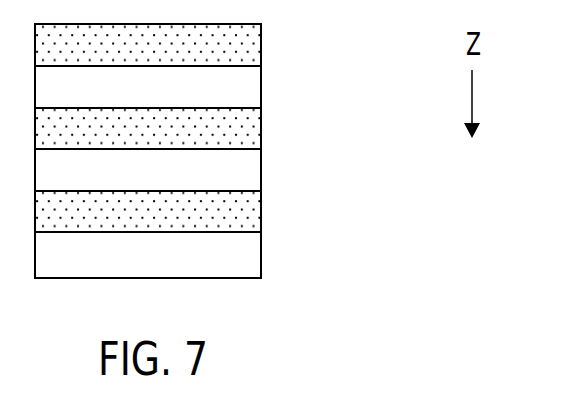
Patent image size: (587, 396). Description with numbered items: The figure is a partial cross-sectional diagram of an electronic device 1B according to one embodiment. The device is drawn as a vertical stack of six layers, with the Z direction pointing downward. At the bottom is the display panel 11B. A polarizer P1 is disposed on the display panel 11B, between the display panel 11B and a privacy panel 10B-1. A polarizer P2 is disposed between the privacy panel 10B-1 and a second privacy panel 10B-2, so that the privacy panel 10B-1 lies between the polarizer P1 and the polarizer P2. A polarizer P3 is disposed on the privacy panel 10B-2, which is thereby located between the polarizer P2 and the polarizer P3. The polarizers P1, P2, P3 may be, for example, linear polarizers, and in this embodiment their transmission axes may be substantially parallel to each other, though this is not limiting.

The electronic device 1B is at (193, 171).
The display panel 11B is at (252, 259).
The polarizer P1 is at (252, 212).
The privacy panel 10B-1 is at (252, 171).
The polarizer P2 is at (252, 130).
The privacy panel 10B-2 is at (252, 87).
The polarizer P3 is at (252, 45).